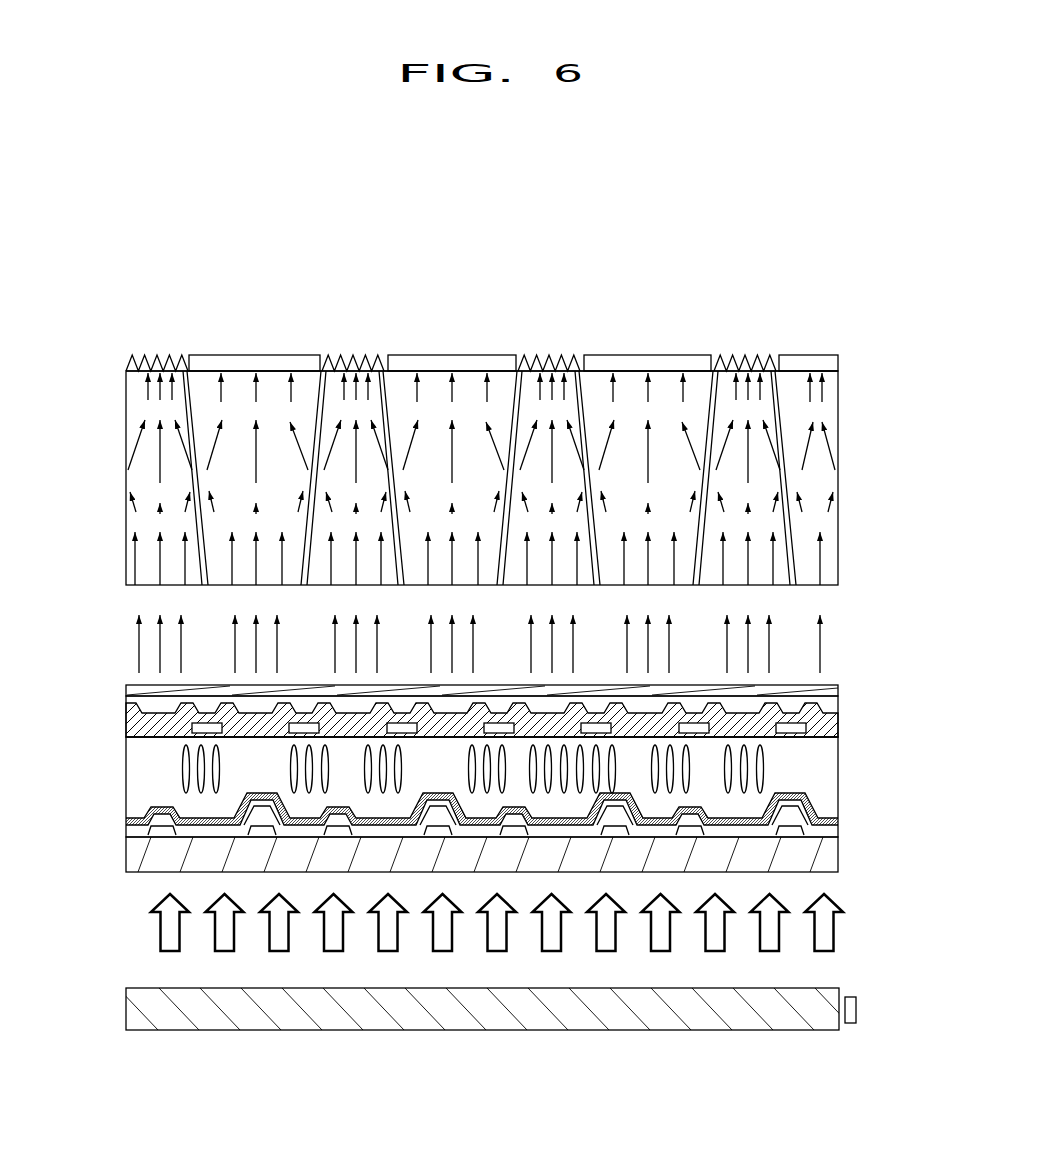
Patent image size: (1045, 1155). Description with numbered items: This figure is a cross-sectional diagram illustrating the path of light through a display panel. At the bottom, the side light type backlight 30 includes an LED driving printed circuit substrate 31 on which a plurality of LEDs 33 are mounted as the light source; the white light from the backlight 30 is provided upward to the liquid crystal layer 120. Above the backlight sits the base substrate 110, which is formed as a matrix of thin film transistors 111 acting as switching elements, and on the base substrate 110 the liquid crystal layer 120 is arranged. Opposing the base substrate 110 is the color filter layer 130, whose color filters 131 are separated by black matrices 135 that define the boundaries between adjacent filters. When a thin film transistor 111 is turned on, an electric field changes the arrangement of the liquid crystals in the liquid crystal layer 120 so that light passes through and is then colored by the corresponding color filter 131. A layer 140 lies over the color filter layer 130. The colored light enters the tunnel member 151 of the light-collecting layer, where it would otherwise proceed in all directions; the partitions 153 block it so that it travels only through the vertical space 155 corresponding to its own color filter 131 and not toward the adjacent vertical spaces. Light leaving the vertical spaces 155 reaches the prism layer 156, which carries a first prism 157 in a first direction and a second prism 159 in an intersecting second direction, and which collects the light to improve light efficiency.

The backlight 30 is at (532, 1040).
The LED driving printed circuit substrate 31 is at (833, 1023).
The LED 33 is at (879, 1011).
The base substrate 110 is at (830, 852).
The thin film transistor 111 is at (812, 815).
The liquid crystal layer 120 is at (841, 768).
The color filter layer 130 is at (497, 716).
The color filter 131 is at (140, 723).
The black matrix 135 is at (208, 722).
The polarizer 140 is at (837, 689).
The tunnel member 151 is at (434, 415).
The partition 153 is at (185, 373).
The vertical space 155 is at (282, 407).
The prism layer 156 is at (434, 332).
The first prism 157 is at (156, 356).
The second prism 159 is at (235, 357).